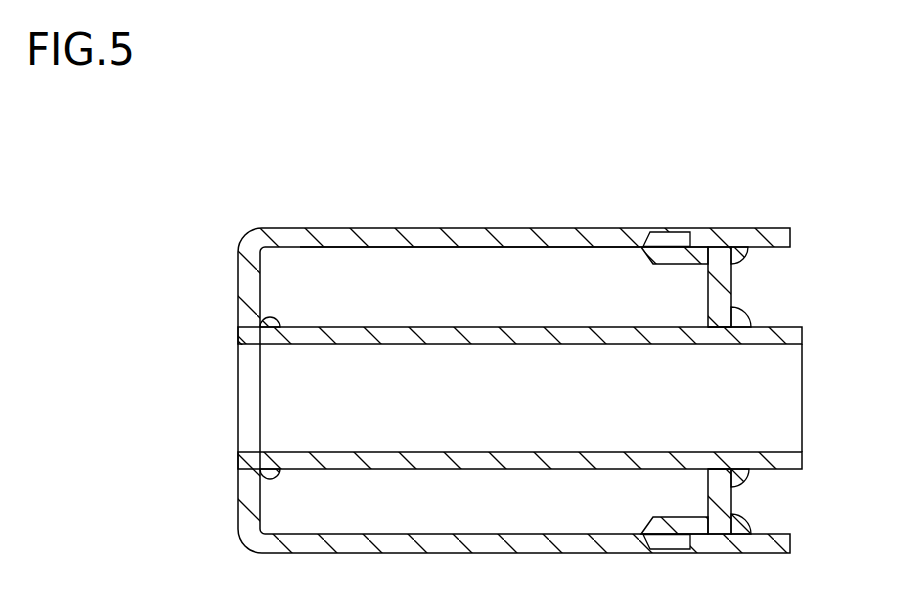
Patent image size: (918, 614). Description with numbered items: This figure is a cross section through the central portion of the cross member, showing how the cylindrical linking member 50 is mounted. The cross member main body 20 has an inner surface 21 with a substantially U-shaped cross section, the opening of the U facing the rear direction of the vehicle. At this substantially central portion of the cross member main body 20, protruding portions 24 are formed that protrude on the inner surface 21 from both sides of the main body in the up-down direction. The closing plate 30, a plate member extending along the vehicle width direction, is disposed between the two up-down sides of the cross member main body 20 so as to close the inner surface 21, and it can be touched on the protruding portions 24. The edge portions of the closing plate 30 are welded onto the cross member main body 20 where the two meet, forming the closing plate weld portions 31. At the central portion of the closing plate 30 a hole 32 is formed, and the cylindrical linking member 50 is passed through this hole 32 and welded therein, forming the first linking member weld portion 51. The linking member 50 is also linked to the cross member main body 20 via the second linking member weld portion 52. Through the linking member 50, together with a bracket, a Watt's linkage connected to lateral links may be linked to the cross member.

The cross member main body 20 is at (517, 231).
The inner surface 21 is at (388, 252).
The protruding portions 24 is at (676, 263).
The closing plate 30 is at (722, 281).
The closing plate weld portions 31 is at (742, 252).
The hole 32 is at (727, 331).
The linking member 50 is at (788, 337).
The first linking member weld portion 51 is at (746, 319).
The second linking member weld portion 52 is at (272, 318).